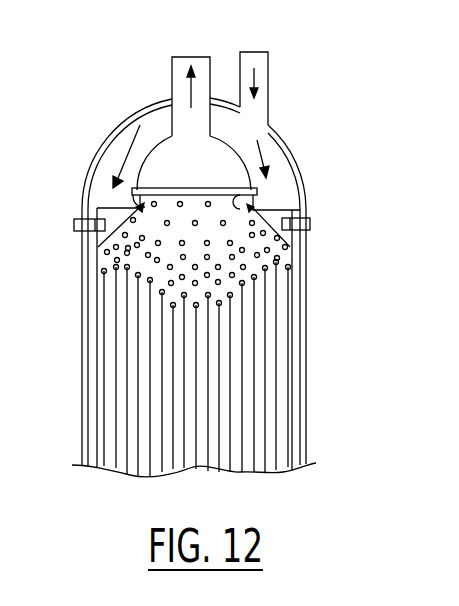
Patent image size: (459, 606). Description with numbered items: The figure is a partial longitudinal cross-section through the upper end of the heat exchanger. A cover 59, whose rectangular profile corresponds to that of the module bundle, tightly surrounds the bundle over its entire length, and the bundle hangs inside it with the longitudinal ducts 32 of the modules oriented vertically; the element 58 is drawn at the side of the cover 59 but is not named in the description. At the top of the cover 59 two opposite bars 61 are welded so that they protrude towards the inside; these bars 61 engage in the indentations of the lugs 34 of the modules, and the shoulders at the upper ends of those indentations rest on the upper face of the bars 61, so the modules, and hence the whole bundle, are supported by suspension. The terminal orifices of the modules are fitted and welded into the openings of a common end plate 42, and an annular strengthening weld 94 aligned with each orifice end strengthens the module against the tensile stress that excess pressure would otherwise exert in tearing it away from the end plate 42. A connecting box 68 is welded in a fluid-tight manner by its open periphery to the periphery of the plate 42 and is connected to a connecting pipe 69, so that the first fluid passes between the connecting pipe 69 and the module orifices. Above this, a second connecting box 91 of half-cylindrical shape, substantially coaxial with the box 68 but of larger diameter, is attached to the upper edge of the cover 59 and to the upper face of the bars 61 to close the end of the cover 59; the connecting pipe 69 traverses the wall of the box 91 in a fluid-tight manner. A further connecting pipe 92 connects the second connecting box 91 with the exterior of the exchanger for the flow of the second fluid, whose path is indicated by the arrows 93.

The longitudinal ducts 32 is at (163, 418).
The lugs 34 is at (273, 205).
The end plate 42 is at (191, 114).
The inner liner wall 58 is at (81, 420).
The cover 59 is at (82, 395).
The bars 61 is at (75, 231).
The connecting box 68 is at (150, 147).
The connecting pipe 69 is at (172, 78).
The second connecting box 91 is at (280, 137).
The connecting pipe 92 is at (270, 66).
The arrows 93 is at (240, 66).
The annular strengthening weld 94 is at (230, 187).